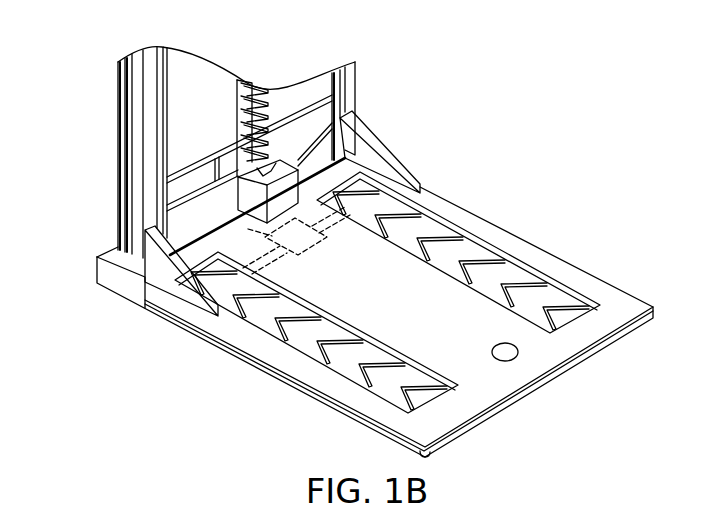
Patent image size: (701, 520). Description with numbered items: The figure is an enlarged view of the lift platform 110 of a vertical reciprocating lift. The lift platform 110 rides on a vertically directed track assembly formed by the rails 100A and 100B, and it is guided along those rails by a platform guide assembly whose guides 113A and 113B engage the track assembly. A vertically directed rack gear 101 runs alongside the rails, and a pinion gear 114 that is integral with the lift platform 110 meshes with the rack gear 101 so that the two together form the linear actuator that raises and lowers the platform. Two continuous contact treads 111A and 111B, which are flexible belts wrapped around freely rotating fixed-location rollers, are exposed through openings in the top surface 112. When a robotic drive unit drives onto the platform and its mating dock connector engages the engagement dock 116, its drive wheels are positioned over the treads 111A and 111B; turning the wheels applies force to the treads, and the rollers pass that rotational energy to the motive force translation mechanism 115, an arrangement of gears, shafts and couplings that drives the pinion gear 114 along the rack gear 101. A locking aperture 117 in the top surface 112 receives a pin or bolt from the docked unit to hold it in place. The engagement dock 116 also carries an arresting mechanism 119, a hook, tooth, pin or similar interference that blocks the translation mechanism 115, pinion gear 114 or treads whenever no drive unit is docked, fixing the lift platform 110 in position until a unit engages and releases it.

The rail 100A is at (349, 90).
The rail 100B is at (152, 135).
The rack gear 101 is at (243, 82).
The lift platform 110 is at (532, 166).
The continuous contact tread 111A is at (504, 270).
The continuous contact tread 111B is at (346, 368).
The top surface 112 is at (600, 290).
The guide 113A is at (371, 137).
The second support gusset 113B is at (167, 271).
The pinion gear 114 is at (228, 216).
The motive force translation mechanism 115 is at (327, 241).
The engagement dock 116 is at (280, 166).
The locking aperture 117 is at (506, 359).
The arresting mechanism 119 is at (237, 158).